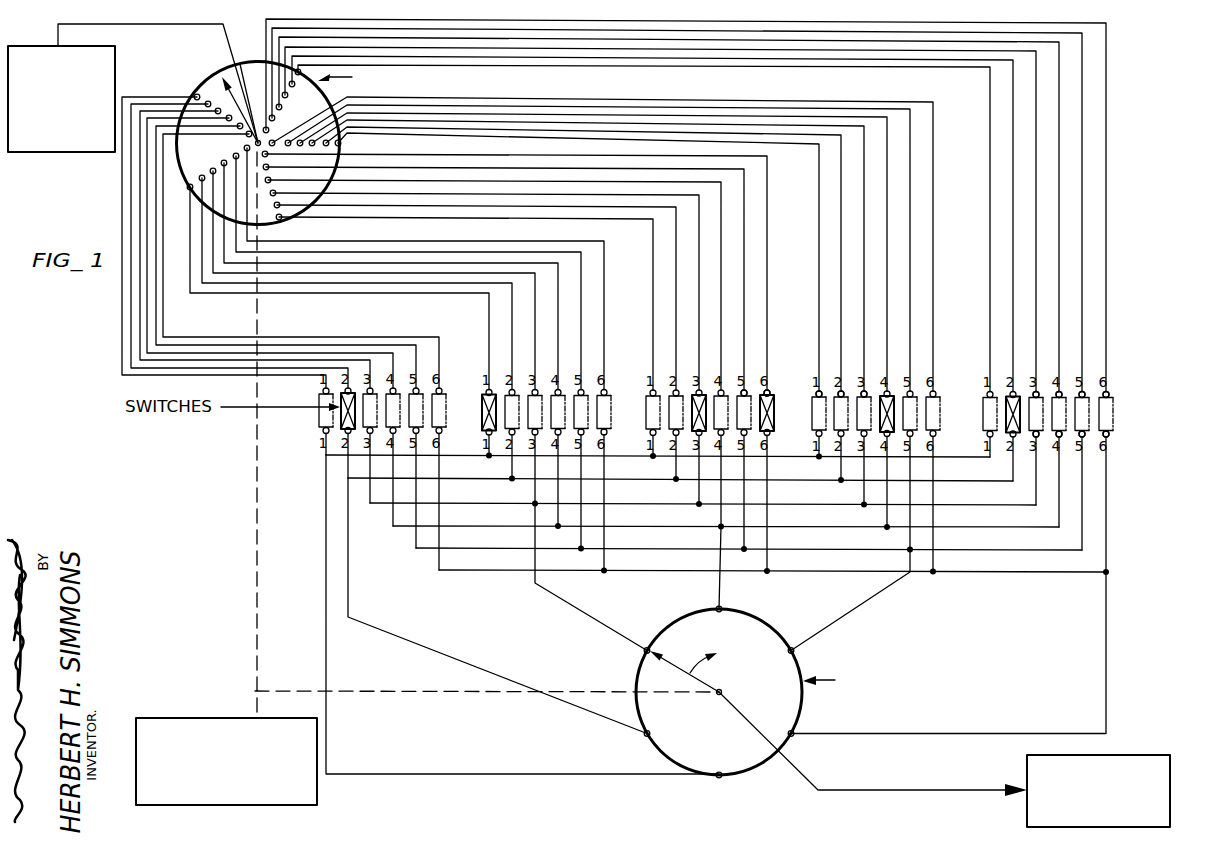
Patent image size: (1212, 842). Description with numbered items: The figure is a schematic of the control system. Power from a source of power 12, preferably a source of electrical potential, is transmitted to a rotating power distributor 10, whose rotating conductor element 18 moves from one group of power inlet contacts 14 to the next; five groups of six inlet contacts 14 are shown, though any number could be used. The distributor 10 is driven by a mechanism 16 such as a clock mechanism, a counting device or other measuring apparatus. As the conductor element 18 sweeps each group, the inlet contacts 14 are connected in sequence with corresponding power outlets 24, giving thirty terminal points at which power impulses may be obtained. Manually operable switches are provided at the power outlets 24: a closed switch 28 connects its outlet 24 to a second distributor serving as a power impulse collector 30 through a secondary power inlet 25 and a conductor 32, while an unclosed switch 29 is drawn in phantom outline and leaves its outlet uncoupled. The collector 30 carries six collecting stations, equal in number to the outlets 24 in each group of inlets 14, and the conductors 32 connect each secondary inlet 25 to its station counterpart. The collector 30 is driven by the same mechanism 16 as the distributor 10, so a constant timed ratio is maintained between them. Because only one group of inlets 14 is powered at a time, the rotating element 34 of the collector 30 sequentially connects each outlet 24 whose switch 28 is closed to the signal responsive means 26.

The power distributor 10 is at (442, 385).
The source of power 12 is at (60, 153).
The power inlet contacts 14 is at (292, 88).
The driving mechanism 16 is at (181, 717).
The rotating conductor element 18 is at (232, 84).
The power outlets 24 is at (744, 390).
The secondary power inlets 25 is at (1036, 437).
The signal responsive means 26 is at (1122, 755).
The closed switch 28 is at (345, 433).
The unclosed switch 29 is at (320, 412).
The power impulse collector 30 is at (636, 670).
The conductors 32 is at (492, 572).
The rotating element of the collector 34 is at (689, 660).